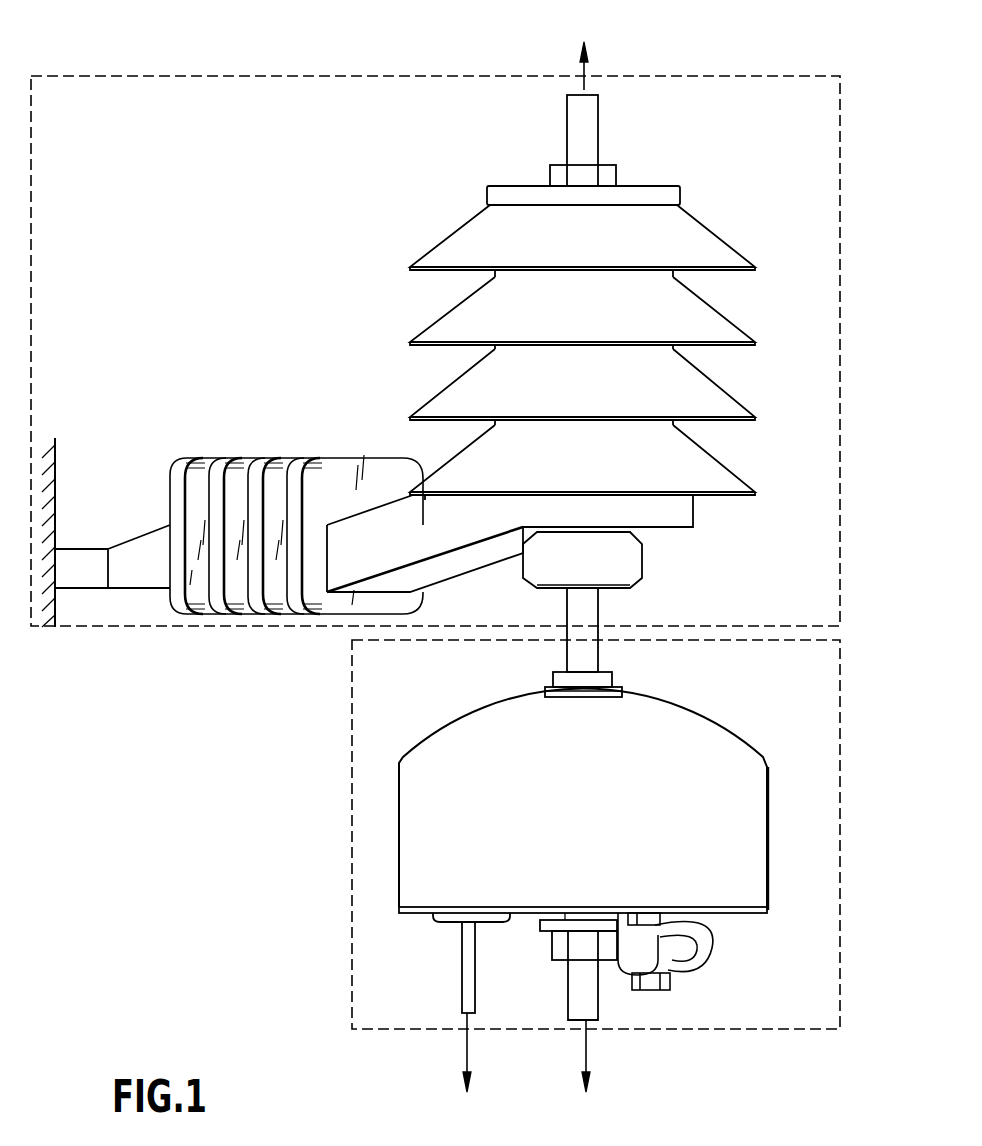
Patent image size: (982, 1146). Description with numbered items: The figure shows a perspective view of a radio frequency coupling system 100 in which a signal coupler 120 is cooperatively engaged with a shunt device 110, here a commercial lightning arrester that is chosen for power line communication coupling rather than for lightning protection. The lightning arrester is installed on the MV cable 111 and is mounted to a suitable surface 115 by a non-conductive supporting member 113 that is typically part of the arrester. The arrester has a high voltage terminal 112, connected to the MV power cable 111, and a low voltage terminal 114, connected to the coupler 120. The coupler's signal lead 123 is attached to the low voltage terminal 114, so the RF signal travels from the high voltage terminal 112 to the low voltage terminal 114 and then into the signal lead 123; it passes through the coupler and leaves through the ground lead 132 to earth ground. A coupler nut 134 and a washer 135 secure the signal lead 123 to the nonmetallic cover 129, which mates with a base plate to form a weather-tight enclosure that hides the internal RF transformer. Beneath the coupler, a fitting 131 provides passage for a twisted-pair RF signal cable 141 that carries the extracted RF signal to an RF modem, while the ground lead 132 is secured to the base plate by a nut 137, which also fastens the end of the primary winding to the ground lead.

The radio frequency coupling system 100 is at (280, 690).
The shunt device 110 is at (727, 77).
The MV cable 111 is at (593, 53).
The high voltage terminal 112 is at (585, 147).
The supporting member 113 is at (238, 500).
The low voltage terminal 114 is at (588, 613).
The surface 115 is at (57, 472).
The signal coupler 120 is at (350, 822).
The signal lead 123 is at (593, 673).
The cover 129 is at (445, 730).
The fitting 131 is at (447, 922).
The ground lead 132 is at (568, 978).
The coupler nut 134 is at (617, 682).
The washer 135 is at (543, 693).
The nut 137 is at (560, 948).
The twisted-pair RF signal cable 141 is at (462, 977).